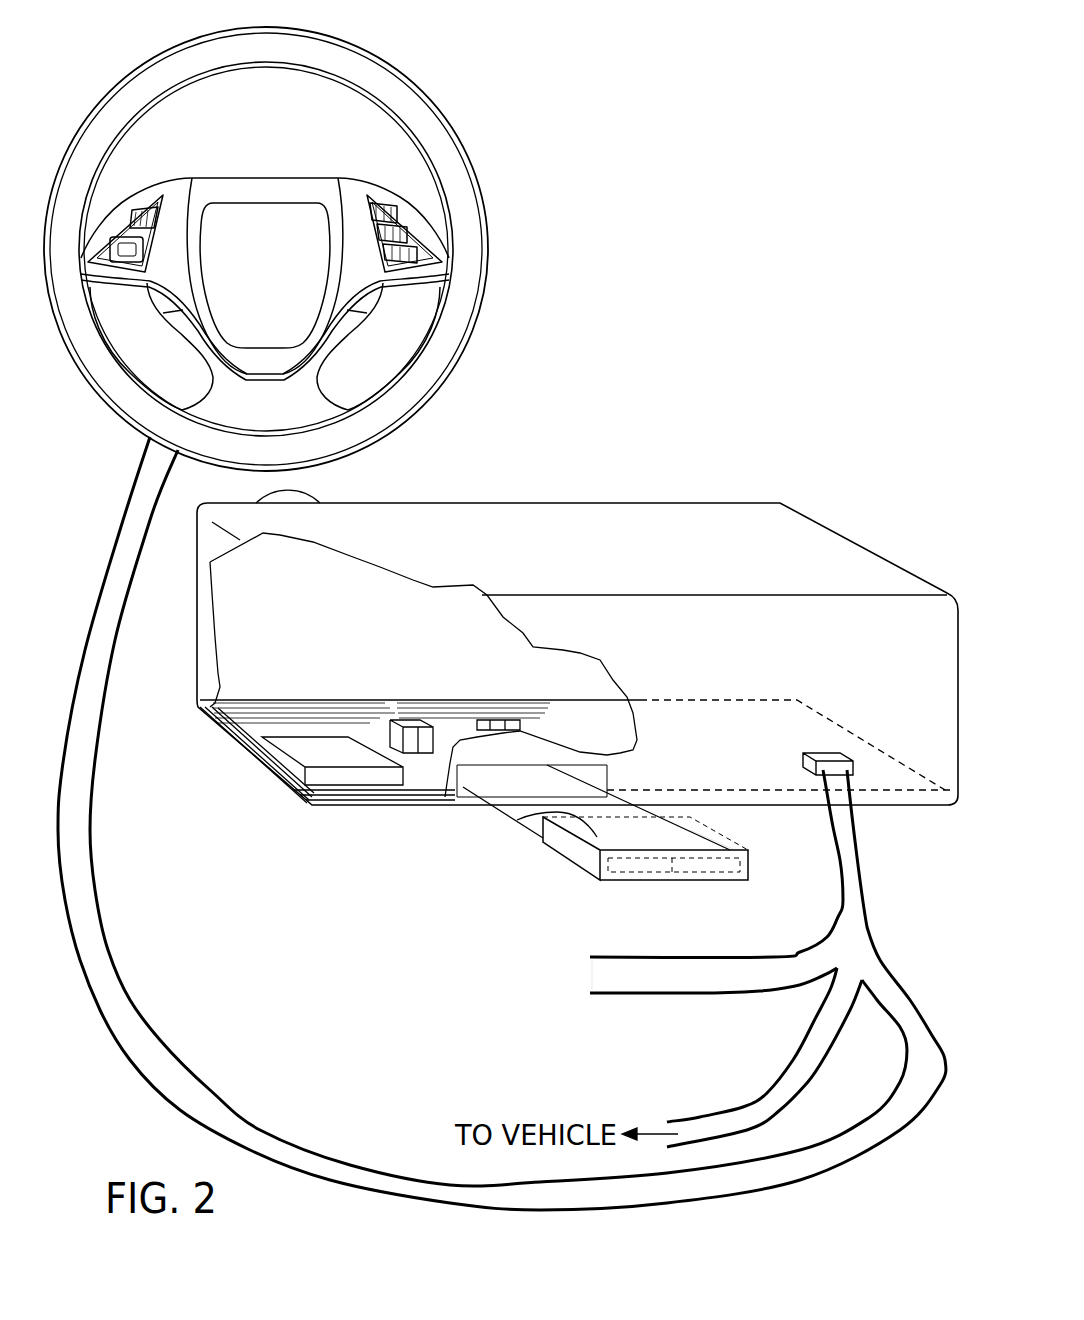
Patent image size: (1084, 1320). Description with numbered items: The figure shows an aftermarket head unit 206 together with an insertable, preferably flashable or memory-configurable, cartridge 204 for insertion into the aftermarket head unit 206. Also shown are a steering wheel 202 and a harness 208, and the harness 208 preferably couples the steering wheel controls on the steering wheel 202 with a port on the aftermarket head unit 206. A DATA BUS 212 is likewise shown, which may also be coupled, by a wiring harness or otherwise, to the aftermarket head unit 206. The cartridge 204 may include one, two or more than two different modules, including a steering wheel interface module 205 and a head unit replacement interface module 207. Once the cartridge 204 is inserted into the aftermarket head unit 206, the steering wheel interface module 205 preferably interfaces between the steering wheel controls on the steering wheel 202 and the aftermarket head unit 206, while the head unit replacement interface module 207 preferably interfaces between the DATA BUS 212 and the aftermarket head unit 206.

The steering wheel 202 is at (458, 157).
The cartridge 204 is at (557, 853).
The steering wheel interface module 205 is at (517, 820).
The aftermarket head unit 206 is at (587, 577).
The head unit replacement interface module 207 is at (798, 936).
The harness 208 is at (187, 1065).
The data bus 212 is at (690, 993).